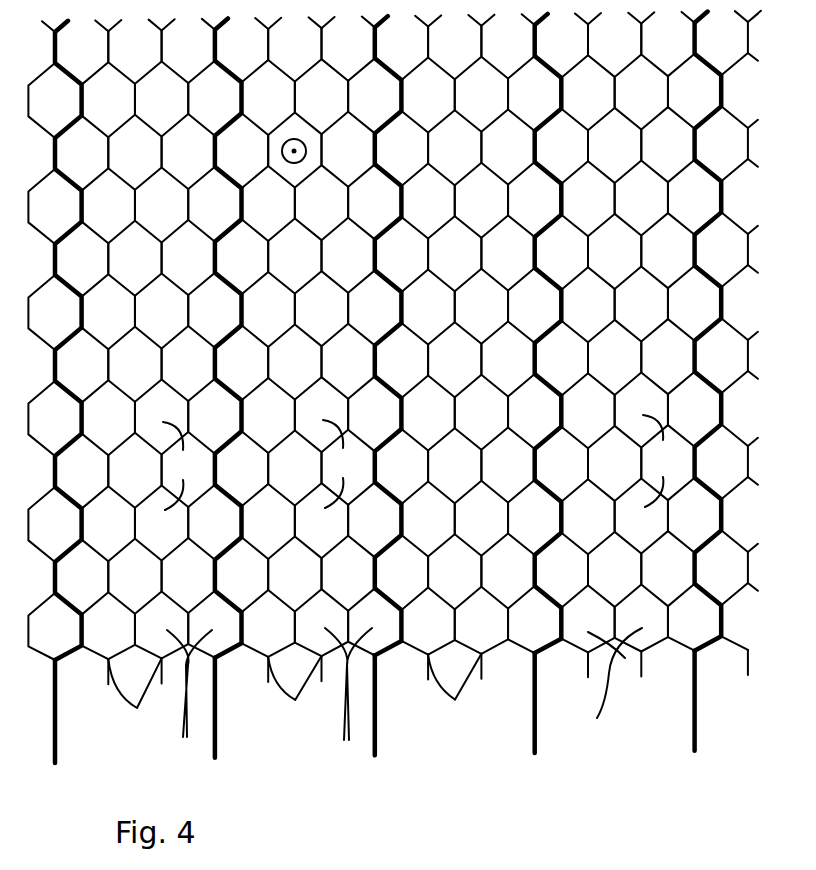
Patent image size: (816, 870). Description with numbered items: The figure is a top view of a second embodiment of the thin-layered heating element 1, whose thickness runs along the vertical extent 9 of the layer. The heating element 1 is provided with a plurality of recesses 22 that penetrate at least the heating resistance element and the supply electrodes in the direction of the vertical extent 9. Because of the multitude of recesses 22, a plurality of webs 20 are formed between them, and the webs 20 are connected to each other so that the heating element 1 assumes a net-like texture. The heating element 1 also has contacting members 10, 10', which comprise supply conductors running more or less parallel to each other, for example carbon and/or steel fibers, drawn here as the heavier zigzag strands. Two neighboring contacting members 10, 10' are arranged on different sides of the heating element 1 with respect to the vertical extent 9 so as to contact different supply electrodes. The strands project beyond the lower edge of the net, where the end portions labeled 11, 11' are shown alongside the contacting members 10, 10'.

The heating element 1 is at (665, 727).
The vertical extent 9 is at (298, 139).
The contacting member 10 is at (397, 335).
The contacting member 10' is at (400, 336).
The wire end section 11 is at (416, 707).
The wire end section 11' is at (376, 712).
The web 20 is at (416, 329).
The recess 22 is at (646, 461).